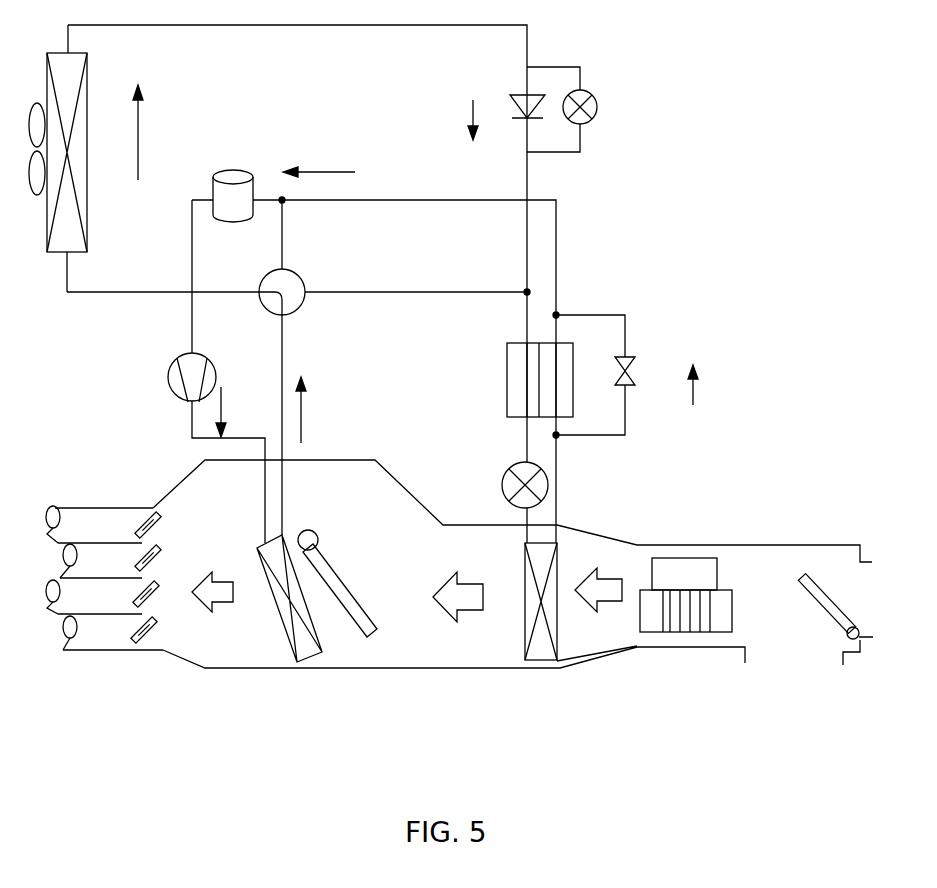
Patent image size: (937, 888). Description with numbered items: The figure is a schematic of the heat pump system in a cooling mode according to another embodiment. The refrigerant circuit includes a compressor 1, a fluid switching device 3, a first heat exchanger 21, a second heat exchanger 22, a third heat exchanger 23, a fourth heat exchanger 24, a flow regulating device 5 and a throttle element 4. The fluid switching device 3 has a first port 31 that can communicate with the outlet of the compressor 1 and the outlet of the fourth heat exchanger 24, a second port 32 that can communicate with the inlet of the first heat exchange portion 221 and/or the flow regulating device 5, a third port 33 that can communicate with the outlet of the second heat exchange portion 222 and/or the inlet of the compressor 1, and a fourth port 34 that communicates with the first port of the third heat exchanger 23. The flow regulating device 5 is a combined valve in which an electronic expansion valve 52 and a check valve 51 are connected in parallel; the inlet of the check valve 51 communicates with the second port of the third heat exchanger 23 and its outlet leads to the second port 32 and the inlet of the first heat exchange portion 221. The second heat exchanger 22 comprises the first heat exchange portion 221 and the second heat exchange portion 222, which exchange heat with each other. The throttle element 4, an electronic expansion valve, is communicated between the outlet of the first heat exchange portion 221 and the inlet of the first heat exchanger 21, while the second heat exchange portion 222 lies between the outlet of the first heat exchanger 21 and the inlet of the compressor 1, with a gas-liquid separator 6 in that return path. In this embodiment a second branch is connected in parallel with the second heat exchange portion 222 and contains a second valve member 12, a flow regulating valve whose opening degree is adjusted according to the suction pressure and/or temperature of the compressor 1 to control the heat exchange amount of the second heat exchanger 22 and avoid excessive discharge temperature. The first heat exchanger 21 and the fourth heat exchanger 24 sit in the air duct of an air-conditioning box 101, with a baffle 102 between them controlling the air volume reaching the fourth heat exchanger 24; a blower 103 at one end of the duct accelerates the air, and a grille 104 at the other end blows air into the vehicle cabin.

The compressor 1 is at (179, 377).
The fluid switching device 3 is at (294, 284).
The throttle element 4 is at (508, 485).
The flow regulating device 5 is at (615, 97).
The gas-liquid separator 6 is at (233, 179).
The second valve member 12 is at (618, 375).
The first heat exchanger 21 is at (560, 601).
The second heat exchanger 22 is at (466, 373).
The third heat exchanger 23 is at (79, 158).
The fourth heat exchanger 24 is at (281, 598).
The first port 31 is at (304, 425).
The second port 32 is at (416, 281).
The third port 33 is at (263, 234).
The fourth port 34 is at (163, 308).
The check valve 51 is at (530, 92).
The electronic expansion valve 52 is at (621, 107).
The air-conditioning box 101 is at (605, 533).
The baffle 102 is at (353, 583).
The blower 103 is at (756, 611).
The grille 104 is at (134, 578).
The first heat exchange portion 221 is at (408, 330).
The second heat exchange portion 222 is at (556, 368).